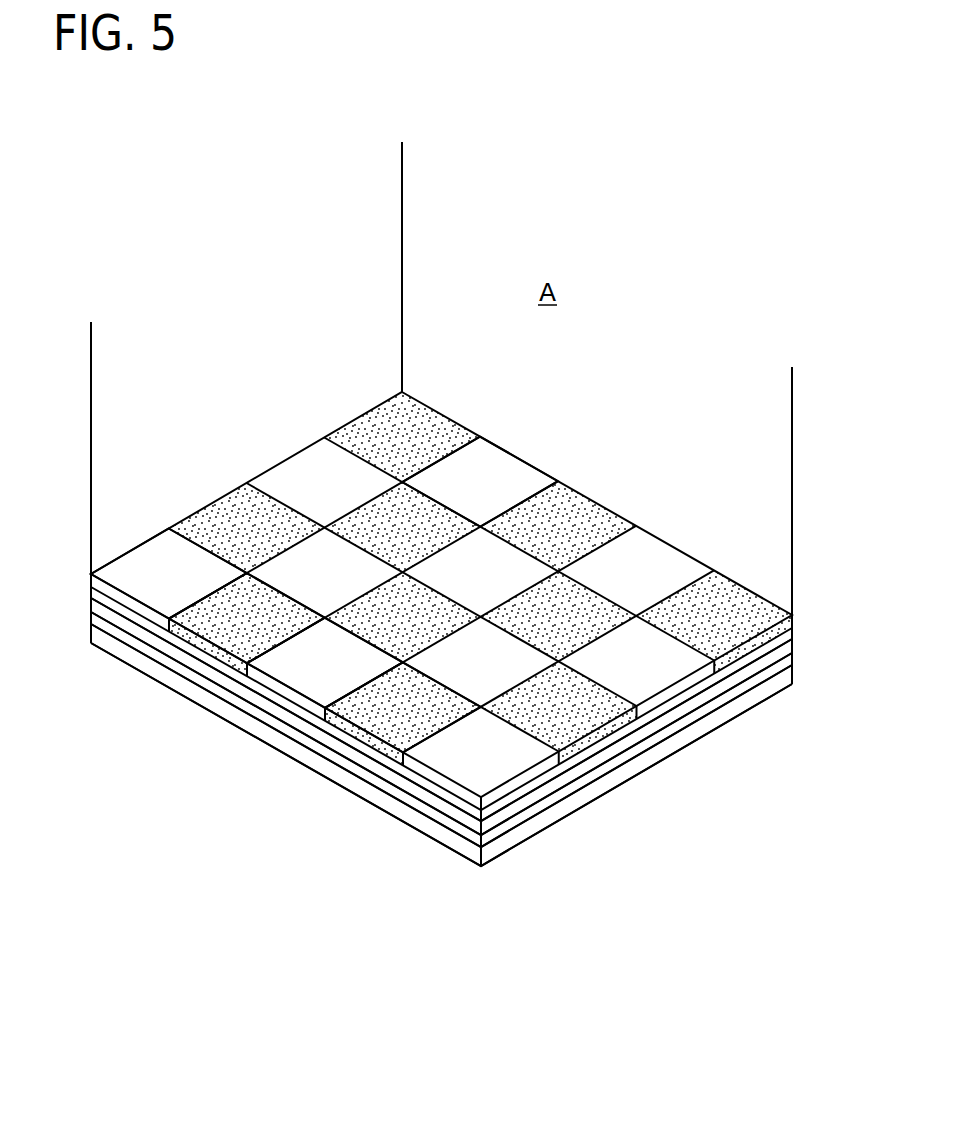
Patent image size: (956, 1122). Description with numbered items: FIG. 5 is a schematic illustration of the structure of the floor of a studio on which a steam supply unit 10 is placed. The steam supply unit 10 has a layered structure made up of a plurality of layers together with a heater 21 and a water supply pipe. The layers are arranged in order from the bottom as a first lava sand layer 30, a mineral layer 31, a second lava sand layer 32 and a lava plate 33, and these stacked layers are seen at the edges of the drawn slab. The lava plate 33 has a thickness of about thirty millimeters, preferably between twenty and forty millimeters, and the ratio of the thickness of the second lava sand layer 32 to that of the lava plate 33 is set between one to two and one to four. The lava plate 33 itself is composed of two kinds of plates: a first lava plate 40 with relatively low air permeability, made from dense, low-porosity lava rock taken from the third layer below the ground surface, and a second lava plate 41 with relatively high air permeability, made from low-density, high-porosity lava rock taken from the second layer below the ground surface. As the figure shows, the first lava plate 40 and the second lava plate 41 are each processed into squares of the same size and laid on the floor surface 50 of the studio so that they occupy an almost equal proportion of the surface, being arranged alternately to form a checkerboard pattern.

The steam supply unit 10 is at (652, 529).
The heater 21 is at (423, 835).
The first lava sand layer 30 is at (498, 838).
The mineral layer 31 is at (526, 808).
The second lava sand layer 32 is at (533, 782).
The lava plate 33 is at (546, 770).
The first lava plate 40 is at (150, 578).
The second lava plate 41 is at (220, 630).
The floor surface 50 is at (493, 478).